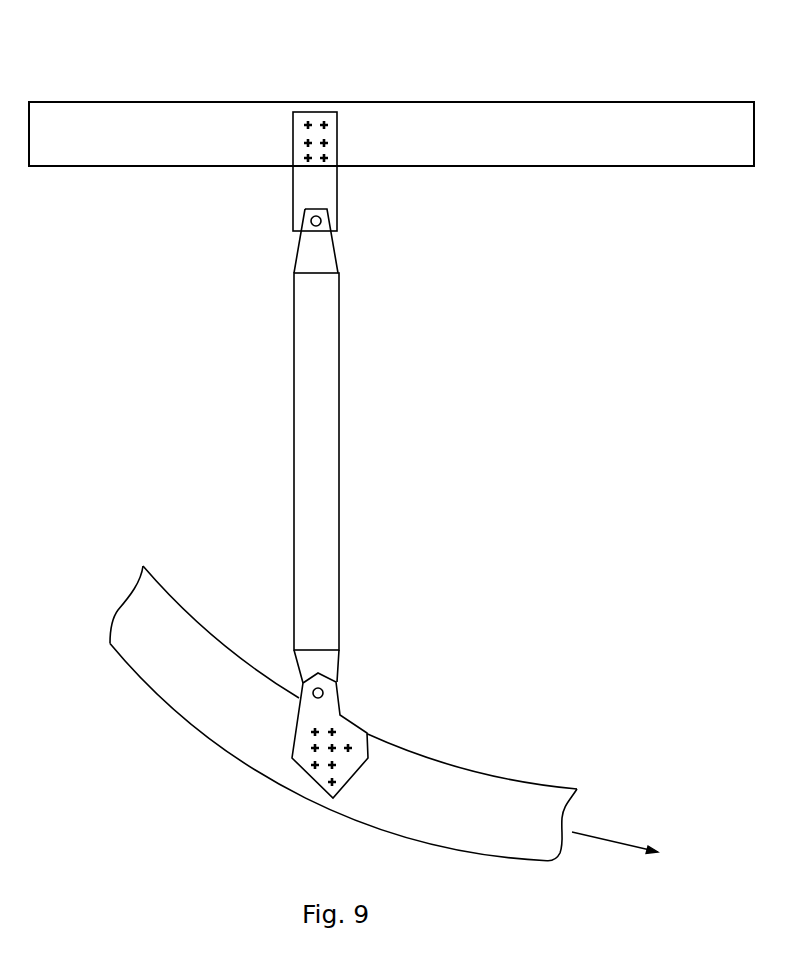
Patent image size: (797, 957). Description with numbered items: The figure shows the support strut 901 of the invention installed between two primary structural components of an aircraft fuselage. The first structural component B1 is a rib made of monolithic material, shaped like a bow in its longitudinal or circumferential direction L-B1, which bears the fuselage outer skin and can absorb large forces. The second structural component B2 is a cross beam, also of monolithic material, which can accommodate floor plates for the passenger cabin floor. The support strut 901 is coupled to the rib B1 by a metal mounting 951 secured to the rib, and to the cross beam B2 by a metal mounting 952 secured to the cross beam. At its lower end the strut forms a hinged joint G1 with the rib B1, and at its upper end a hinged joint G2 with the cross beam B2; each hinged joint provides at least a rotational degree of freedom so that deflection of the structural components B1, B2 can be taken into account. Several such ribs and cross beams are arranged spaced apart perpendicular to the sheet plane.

The second structural component B2 is at (403, 122).
The first structural component B1 is at (220, 723).
The metal mounting 952 is at (305, 145).
The metal mounting 951 is at (352, 735).
The support strut 901 is at (338, 423).
The hinged joint G2 is at (320, 224).
The hinged joint G1 is at (323, 692).
The longitudinal or circumferential direction L-B1 is at (639, 850).